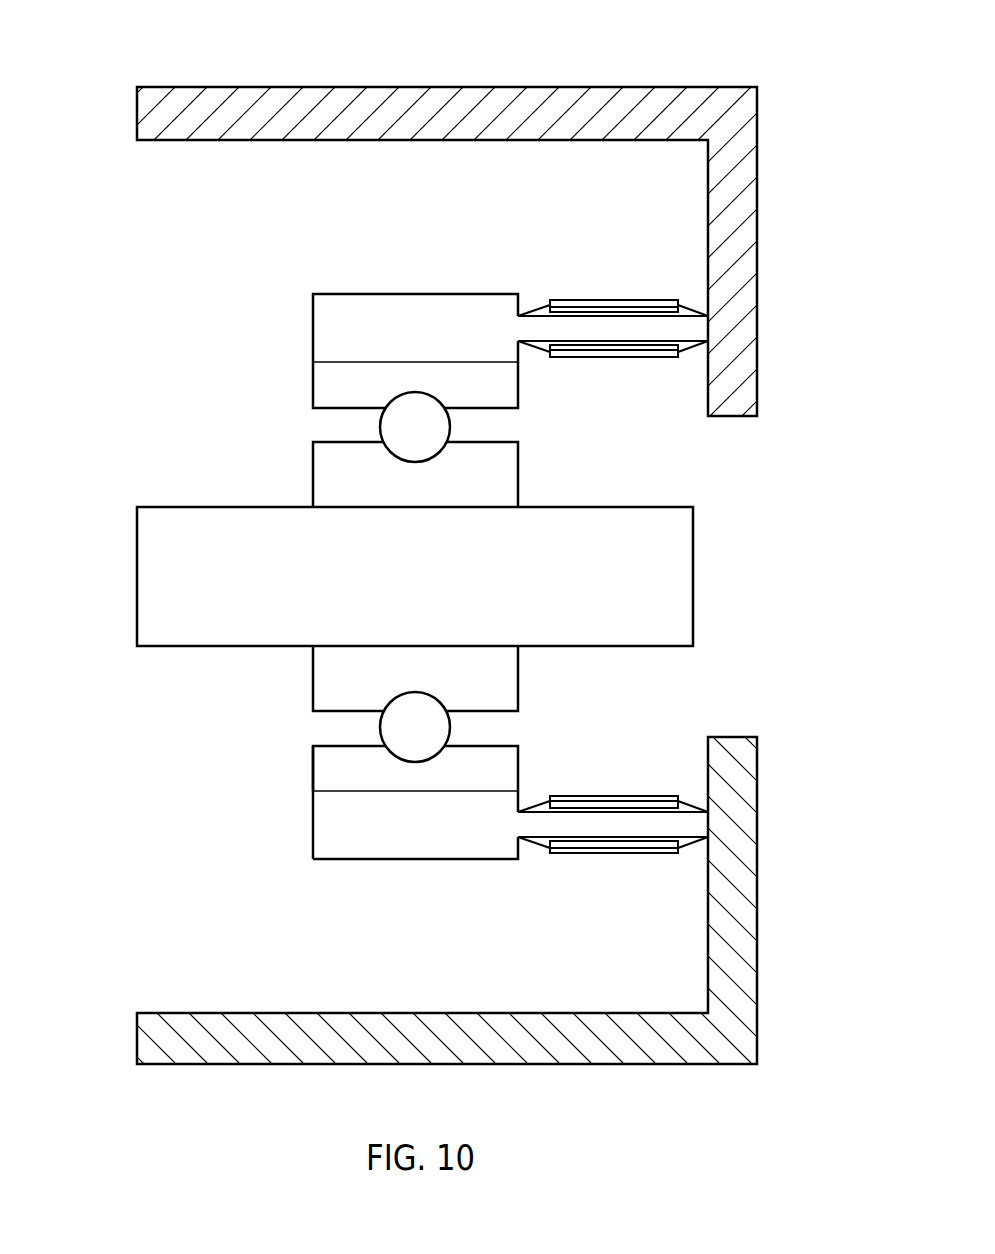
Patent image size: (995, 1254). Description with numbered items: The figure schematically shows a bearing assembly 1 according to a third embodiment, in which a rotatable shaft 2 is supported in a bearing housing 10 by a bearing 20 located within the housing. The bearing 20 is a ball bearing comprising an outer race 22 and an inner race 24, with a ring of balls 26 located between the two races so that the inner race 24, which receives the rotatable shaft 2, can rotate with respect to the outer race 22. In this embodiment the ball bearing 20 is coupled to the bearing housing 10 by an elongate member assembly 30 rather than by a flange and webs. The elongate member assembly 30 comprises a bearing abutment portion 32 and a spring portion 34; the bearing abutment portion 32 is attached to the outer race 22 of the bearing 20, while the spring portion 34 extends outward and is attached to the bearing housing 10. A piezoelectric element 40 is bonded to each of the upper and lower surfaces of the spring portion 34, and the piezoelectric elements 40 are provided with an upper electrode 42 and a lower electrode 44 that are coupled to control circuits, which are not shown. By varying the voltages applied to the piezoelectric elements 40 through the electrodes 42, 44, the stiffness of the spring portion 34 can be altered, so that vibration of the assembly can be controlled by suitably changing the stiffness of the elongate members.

The bearing assembly 1 is at (58, 34).
The rotatable shaft 2 is at (645, 569).
The bearing housing 10 is at (604, 87).
The bearing 20 is at (176, 364).
The outer race 22 is at (495, 378).
The inner race 24 is at (482, 471).
The balls 26 is at (395, 427).
The elongate member assembly 30 is at (476, 308).
The bearing abutment portion 32 is at (375, 307).
The spring portion 34 is at (622, 328).
The piezoelectric element 40 is at (696, 312).
The upper electrode 42 is at (582, 300).
The lower electrode 44 is at (612, 358).